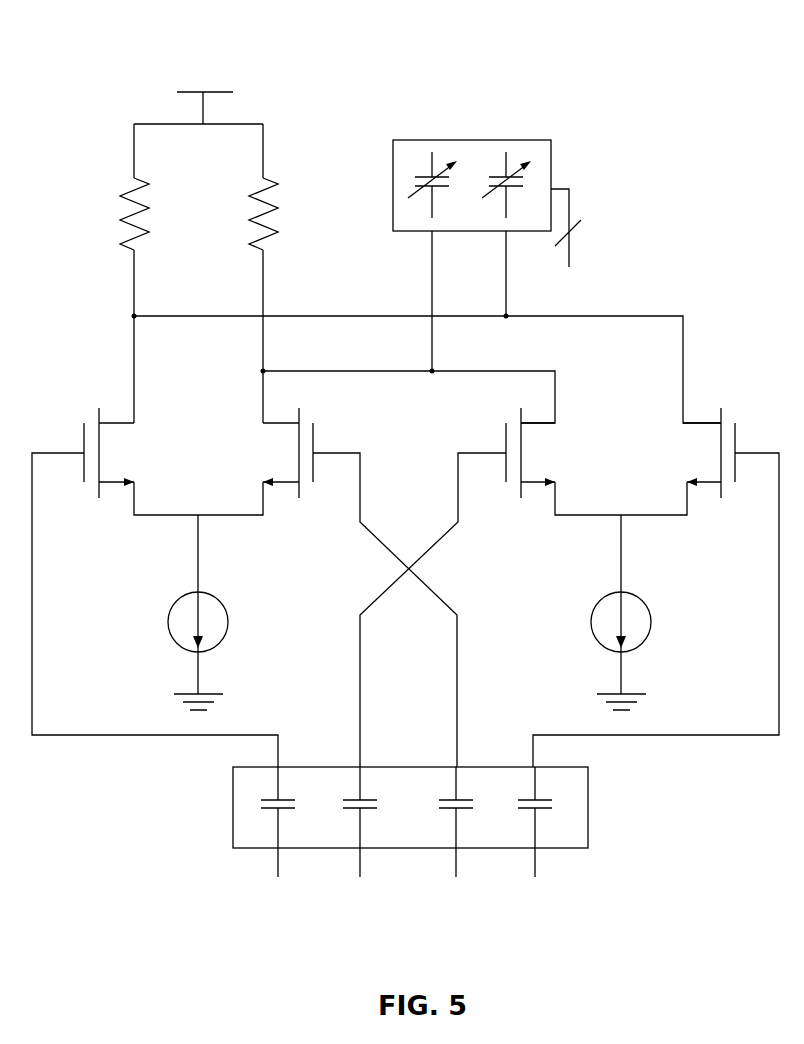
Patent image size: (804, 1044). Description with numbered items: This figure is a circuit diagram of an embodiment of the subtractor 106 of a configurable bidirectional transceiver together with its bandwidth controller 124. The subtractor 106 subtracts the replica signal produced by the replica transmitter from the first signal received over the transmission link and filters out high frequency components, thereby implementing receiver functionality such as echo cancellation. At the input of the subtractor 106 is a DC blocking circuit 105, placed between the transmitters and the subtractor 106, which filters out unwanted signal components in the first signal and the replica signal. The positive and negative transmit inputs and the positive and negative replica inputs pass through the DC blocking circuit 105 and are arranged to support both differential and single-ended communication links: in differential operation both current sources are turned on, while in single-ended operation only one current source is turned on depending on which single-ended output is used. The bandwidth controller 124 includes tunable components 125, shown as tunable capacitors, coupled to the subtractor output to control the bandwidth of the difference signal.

The subtractor 106 is at (101, 46).
The bandwidth controller 124 is at (540, 138).
The tunable component 125 is at (427, 172).
The DC blocking circuit 105 is at (590, 797).